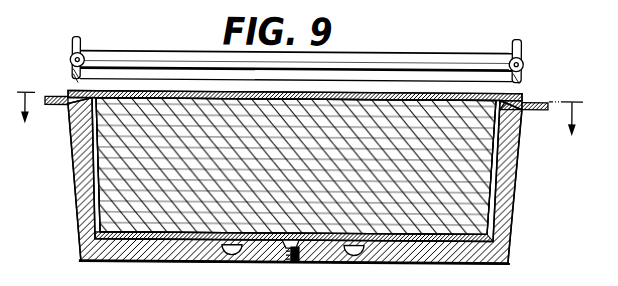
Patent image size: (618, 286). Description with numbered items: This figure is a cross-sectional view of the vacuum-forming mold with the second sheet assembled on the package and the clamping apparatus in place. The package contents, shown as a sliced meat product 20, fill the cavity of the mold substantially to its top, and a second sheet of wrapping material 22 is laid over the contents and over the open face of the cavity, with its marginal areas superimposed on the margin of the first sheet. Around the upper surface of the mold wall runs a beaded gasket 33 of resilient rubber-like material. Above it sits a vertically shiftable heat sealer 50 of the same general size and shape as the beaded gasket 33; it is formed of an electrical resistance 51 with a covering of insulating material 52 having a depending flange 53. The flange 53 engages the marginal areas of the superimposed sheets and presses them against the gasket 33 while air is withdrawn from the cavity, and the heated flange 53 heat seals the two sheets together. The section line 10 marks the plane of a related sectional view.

The section line 10 is at (303, 102).
The sliced meat product 20 is at (120, 184).
The second sheet of wrapping material 22 is at (519, 101).
The beaded gasket 33 is at (523, 128).
The heat sealer 50 is at (137, 24).
The electrical resistance 51 is at (68, 54).
The covering of insulating material 52 is at (424, 43).
The depending flange 53 is at (70, 72).